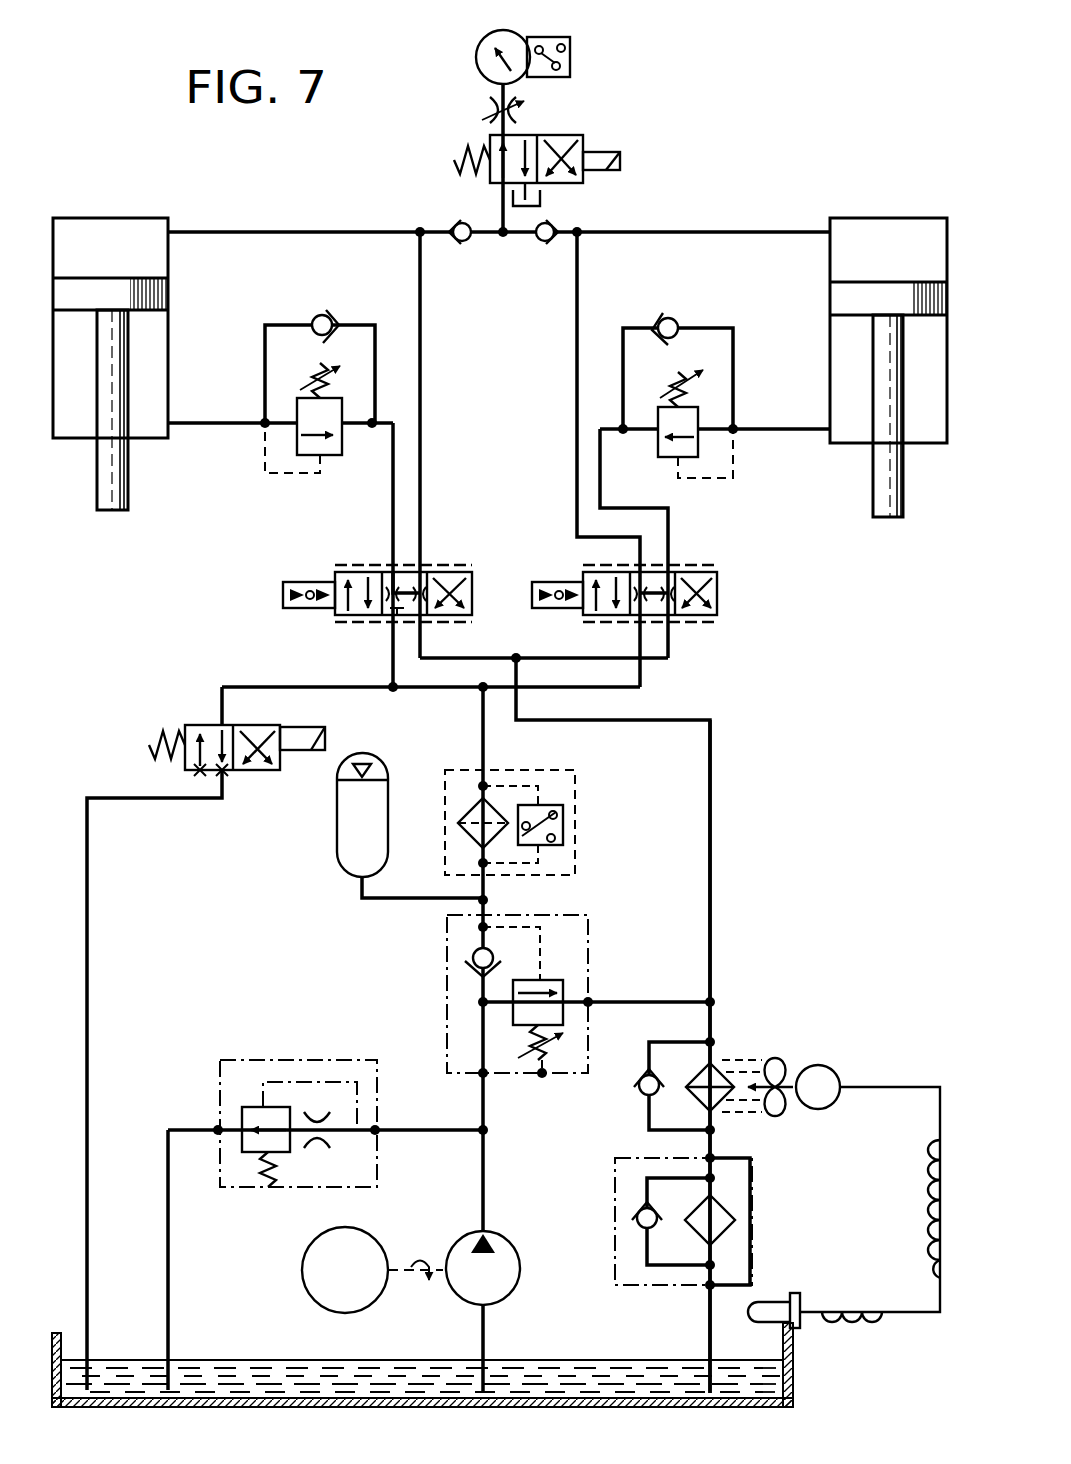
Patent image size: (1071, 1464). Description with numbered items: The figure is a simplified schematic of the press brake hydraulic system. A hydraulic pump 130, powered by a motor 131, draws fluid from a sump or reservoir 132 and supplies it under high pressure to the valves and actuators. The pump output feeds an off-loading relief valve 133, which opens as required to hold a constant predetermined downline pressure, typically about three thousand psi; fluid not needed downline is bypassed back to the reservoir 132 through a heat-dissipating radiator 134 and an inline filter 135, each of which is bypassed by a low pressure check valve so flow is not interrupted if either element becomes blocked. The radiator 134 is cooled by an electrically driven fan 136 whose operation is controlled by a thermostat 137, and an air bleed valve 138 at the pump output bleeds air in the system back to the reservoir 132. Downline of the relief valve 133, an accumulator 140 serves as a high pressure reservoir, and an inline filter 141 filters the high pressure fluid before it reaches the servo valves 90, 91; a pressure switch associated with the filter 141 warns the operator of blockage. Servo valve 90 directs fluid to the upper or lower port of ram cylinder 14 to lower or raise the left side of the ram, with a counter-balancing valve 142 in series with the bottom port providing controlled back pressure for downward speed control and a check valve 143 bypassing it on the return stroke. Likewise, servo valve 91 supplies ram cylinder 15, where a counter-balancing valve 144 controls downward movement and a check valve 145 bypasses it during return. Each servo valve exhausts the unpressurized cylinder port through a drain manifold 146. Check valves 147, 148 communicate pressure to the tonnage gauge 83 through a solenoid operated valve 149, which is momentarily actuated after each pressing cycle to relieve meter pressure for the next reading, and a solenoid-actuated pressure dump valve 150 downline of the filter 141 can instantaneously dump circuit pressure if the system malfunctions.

The tonnage meter 83 is at (477, 46).
The ram cylinder 14 is at (168, 356).
The ram cylinder 15 is at (850, 372).
The servo valve 90 is at (318, 582).
The servo valve 91 is at (558, 582).
The hydraulic pump 130 is at (508, 1250).
The motor 131 is at (362, 1305).
The reservoir 132 is at (545, 200).
The off-loading relief valve 133 is at (583, 932).
The radiator 134 is at (720, 1063).
The inline filter 135 is at (712, 1215).
The fan 136 is at (827, 1066).
The thermostat 137 is at (800, 1325).
The air bleed valve 138 is at (370, 1168).
The accumulator 140 is at (350, 853).
The inline filter 141 is at (460, 790).
The counter-balancing valve 142 is at (338, 448).
The check valve 143 is at (318, 316).
The counter-balancing valve 144 is at (665, 462).
The check valve 145 is at (678, 318).
The drain manifold 146 is at (712, 797).
The check valve 147 is at (466, 243).
The check valve 148 is at (541, 243).
The solenoid operated valve 149 is at (583, 138).
The pressure dump valve 150 is at (290, 742).